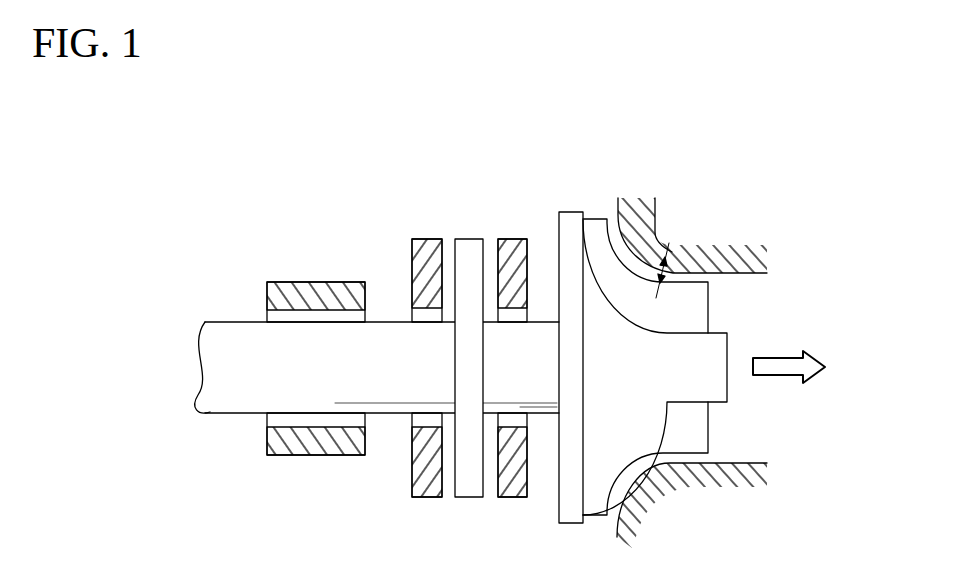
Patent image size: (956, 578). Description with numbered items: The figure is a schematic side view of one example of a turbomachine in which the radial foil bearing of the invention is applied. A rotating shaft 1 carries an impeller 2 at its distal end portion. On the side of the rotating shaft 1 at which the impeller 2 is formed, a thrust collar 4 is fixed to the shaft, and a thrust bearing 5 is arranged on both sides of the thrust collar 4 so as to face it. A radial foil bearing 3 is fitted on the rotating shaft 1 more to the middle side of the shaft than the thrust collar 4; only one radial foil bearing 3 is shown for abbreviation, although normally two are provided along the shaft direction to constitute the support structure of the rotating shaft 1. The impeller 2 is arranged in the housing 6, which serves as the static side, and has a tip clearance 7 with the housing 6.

The rotating shaft 1 is at (231, 330).
The impeller 2 is at (613, 270).
The radial foil bearing 3 is at (318, 290).
The thrust collar 4 is at (471, 250).
The thrust bearing 5 is at (425, 248).
The housing 6 is at (646, 242).
The tip clearance 7 is at (688, 274).